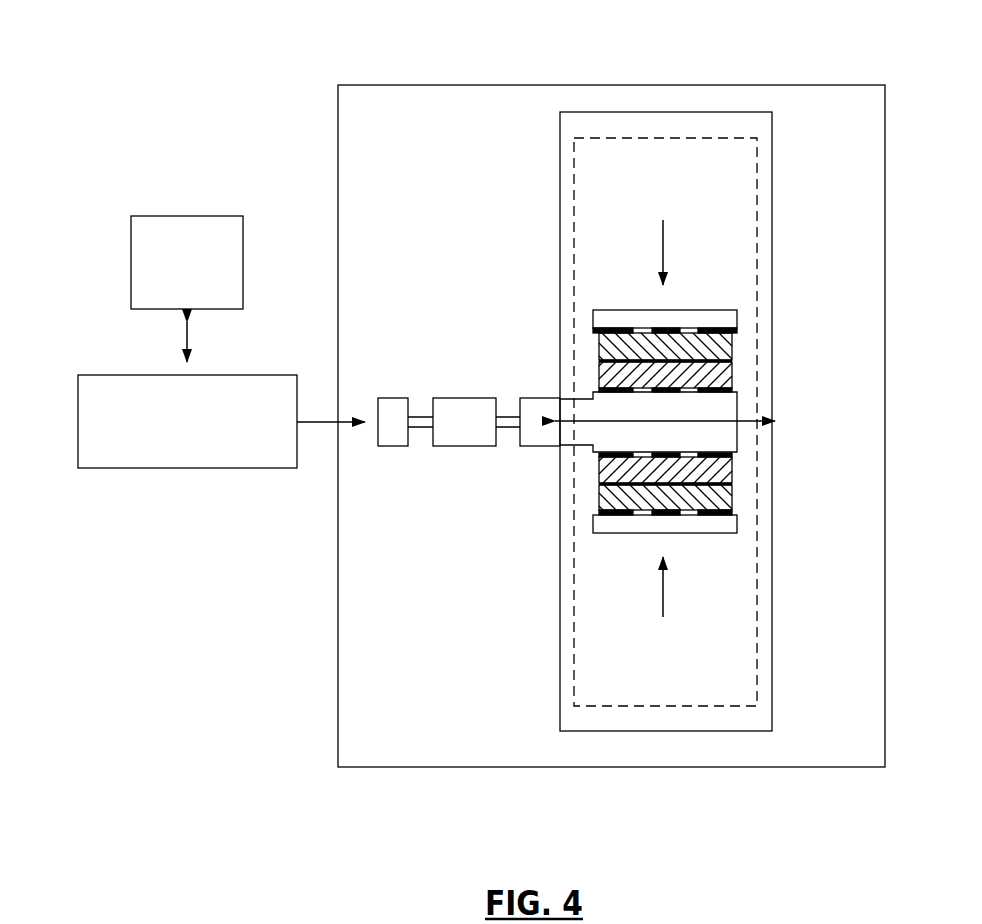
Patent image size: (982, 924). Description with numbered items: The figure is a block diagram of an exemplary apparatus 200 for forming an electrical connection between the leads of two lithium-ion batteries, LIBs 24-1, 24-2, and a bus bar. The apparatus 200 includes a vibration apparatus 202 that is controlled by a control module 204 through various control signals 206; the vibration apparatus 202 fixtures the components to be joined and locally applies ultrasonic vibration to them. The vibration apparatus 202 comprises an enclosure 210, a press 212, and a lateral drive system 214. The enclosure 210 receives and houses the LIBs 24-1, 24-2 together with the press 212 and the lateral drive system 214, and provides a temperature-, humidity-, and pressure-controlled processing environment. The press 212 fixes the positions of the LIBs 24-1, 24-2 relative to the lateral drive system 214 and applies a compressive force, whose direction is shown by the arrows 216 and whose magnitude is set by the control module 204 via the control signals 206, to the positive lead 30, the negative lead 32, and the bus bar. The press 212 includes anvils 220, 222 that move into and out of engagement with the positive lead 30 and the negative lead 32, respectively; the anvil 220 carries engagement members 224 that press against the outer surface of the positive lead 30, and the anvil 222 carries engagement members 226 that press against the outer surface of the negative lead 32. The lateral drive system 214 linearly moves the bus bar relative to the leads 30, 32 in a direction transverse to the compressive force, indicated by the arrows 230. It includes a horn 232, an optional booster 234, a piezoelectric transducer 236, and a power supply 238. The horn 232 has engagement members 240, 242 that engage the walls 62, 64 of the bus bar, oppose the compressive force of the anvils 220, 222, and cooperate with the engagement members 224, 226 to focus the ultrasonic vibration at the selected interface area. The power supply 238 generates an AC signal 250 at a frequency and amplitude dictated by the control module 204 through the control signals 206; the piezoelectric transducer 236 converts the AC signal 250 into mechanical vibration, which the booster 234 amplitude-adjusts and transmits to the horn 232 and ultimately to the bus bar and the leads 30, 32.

The apparatus 200 is at (88, 74).
The vibration apparatus 202 is at (355, 85).
The control module 204 is at (187, 216).
The control signals 206 is at (190, 352).
The enclosure 210 is at (664, 85).
The press 212 is at (560, 157).
The lateral drive system 214 is at (442, 329).
The arrows indicating direction of compressive force 216 is at (663, 232).
The anvil 220 is at (640, 533).
The anvil 222 is at (630, 310).
The engagement members 224 is at (690, 515).
The engagement members 226 is at (692, 333).
The arrows indicating direction of relative linear movement 230 is at (758, 412).
The horn 232 is at (533, 398).
The booster 234 is at (465, 398).
The piezoelectric transducer 236 is at (392, 398).
The power supply 238 is at (95, 375).
The engagement member 240 is at (645, 457).
The engagement member 242 is at (660, 358).
The AC signal 250 is at (320, 420).
The LIB 24-1 is at (574, 670).
The LIB 24-2 is at (574, 270).
The positive lead 30 is at (732, 500).
The negative lead 32 is at (732, 343).
The wall 62 is at (732, 470).
The wall 64 is at (732, 375).